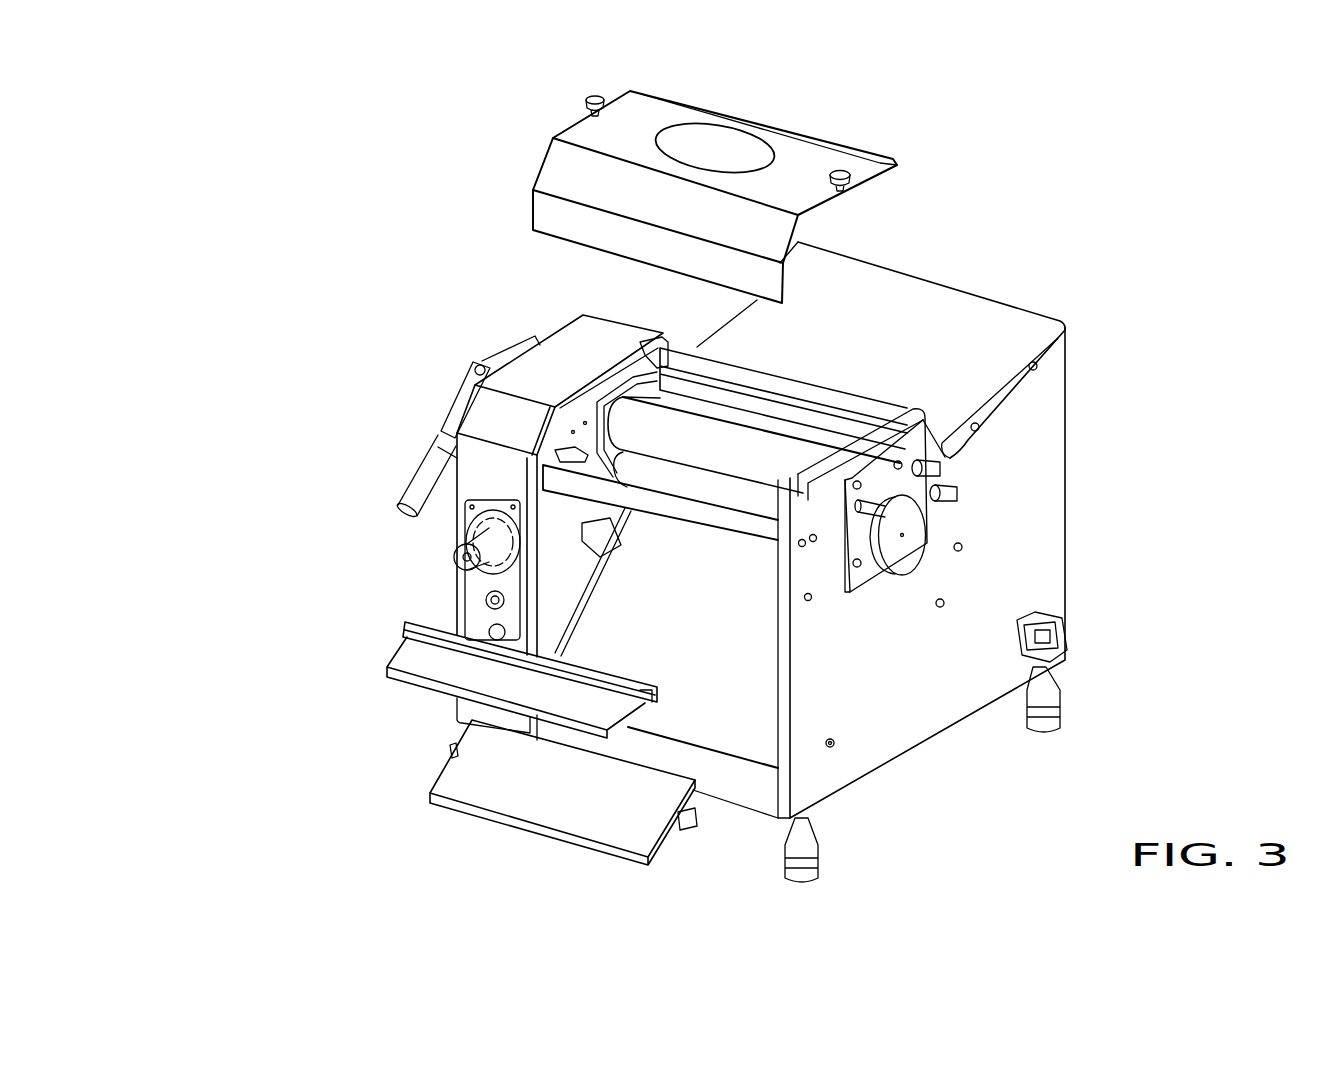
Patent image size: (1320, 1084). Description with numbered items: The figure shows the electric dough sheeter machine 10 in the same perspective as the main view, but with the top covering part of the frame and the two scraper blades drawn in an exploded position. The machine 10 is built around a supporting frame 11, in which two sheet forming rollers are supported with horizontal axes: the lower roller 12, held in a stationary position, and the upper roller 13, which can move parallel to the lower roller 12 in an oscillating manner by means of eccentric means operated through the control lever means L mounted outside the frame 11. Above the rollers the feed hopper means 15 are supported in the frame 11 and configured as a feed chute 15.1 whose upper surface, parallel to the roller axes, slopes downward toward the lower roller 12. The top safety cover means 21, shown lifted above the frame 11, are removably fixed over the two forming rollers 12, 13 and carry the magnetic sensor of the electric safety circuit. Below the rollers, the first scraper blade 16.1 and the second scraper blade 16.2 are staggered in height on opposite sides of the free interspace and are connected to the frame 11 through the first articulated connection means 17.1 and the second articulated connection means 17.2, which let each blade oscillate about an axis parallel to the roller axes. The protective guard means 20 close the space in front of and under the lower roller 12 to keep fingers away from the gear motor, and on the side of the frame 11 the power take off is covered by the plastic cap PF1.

The electric dough sheeter machine 10 is at (448, 336).
The supporting frame 11 is at (1104, 505).
The lower roller 12 is at (685, 480).
The upper roller 13 is at (750, 450).
The feed hopper means 15 is at (1026, 300).
The feed chute 15.1 is at (935, 318).
The first scraper blade 16.1 is at (577, 845).
The second scraper blade 16.2 is at (408, 692).
The first articulated connection means 17.1 is at (444, 753).
The second articulated connection means 17.2 is at (716, 655).
The protective guard means 20 is at (745, 735).
The top safety cover means 21 is at (840, 128).
The control lever means L is at (433, 427).
The cap PF1 is at (900, 562).